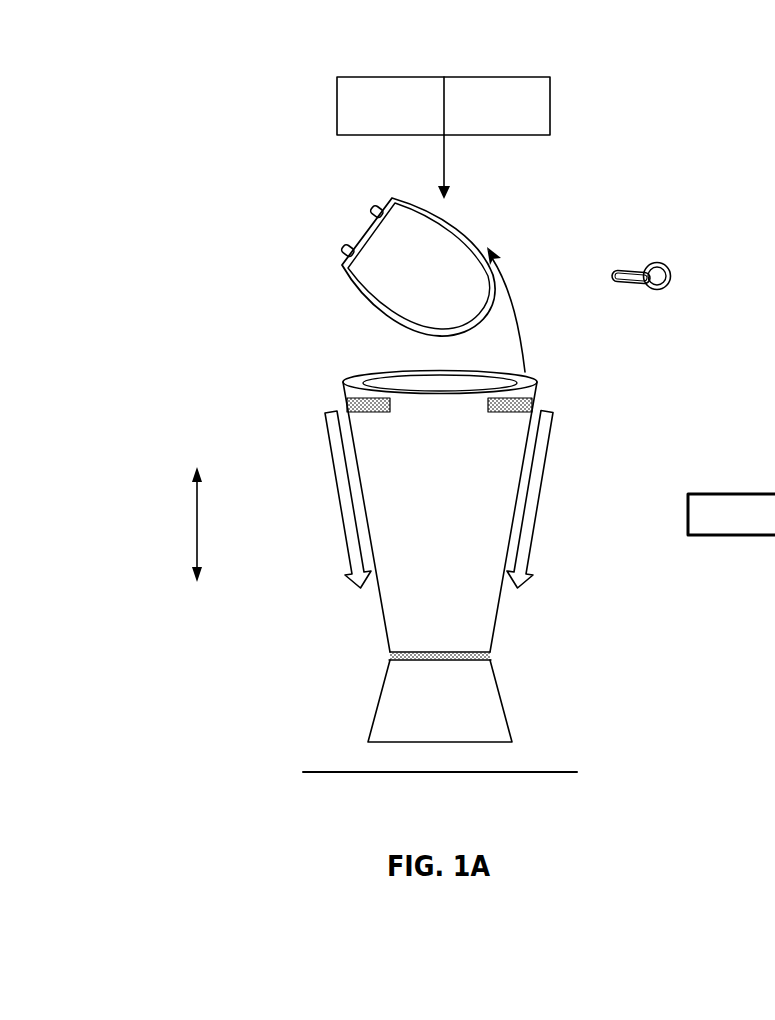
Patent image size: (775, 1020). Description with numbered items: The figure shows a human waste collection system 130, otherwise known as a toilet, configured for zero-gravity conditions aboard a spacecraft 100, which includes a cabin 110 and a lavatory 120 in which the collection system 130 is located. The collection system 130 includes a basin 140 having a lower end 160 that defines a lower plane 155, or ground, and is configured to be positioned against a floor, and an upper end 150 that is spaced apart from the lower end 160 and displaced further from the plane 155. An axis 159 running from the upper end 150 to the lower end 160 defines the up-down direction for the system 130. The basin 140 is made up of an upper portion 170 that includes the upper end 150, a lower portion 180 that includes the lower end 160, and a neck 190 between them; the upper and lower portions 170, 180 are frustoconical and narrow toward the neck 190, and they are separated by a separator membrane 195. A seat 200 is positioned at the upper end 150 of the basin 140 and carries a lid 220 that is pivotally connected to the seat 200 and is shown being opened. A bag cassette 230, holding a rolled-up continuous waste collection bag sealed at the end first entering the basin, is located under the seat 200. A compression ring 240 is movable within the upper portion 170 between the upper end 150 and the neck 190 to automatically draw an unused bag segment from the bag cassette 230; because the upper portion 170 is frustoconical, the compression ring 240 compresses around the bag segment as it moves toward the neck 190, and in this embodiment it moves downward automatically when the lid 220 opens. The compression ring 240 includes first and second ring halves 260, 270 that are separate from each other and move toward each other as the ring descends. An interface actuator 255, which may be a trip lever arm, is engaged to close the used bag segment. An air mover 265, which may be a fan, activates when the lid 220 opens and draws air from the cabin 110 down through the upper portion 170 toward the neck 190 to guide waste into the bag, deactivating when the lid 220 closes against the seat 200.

The spacecraft 100 is at (550, 98).
The cabin 110 is at (407, 120).
The lavatory 120 is at (523, 120).
The human waste collection system 130 is at (660, 116).
The basin 140 is at (400, 608).
The upper end 150 is at (407, 372).
The lower plane 155 is at (440, 773).
The axis 159 is at (196, 515).
The lower end 160 is at (378, 732).
The upper portion 170 is at (517, 442).
The lower portion 180 is at (500, 728).
The neck 190 is at (496, 671).
The separator membrane 195 is at (490, 668).
The seat 200 is at (340, 257).
The lid 220 is at (463, 230).
The bag cassette 230 is at (522, 357).
The compression ring 240 is at (528, 375).
The interface actuator 255 is at (658, 290).
The first ring half 260 is at (531, 419).
The air mover 265 is at (237, 413).
The second ring half 270 is at (346, 403).